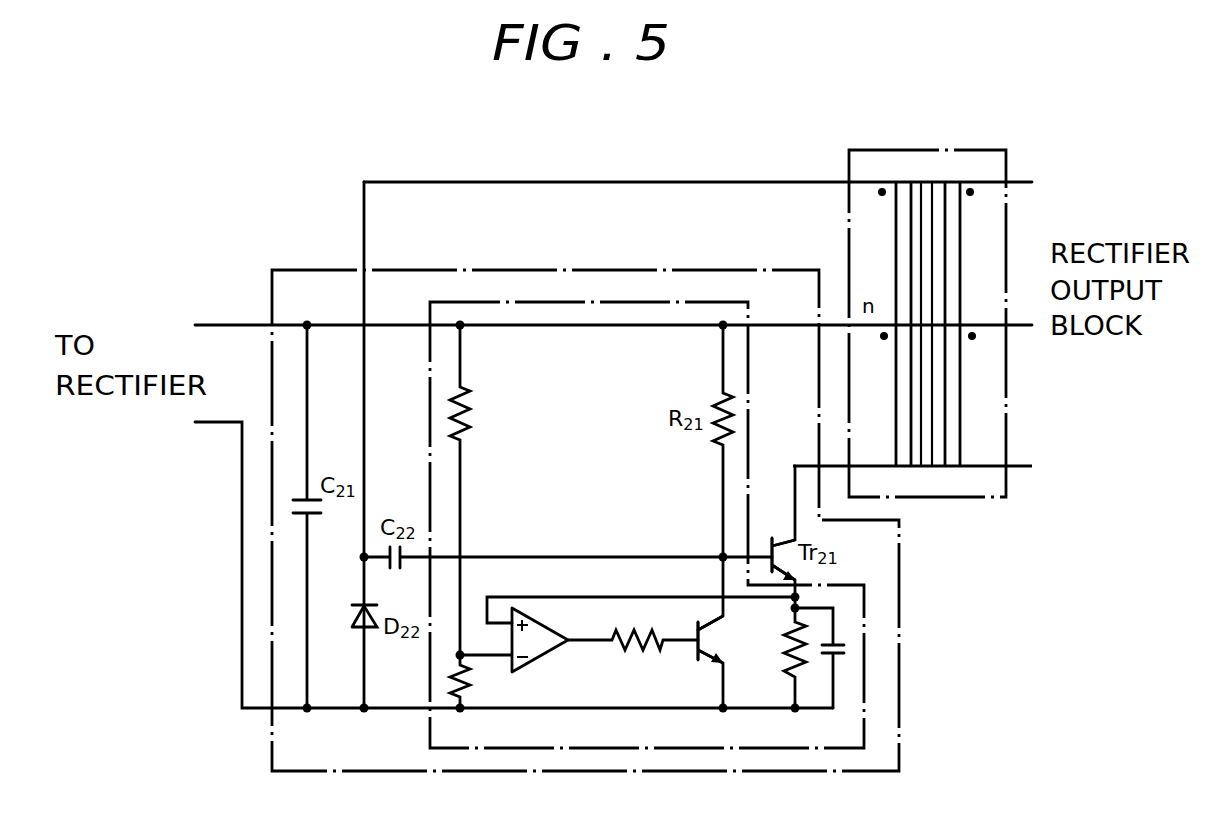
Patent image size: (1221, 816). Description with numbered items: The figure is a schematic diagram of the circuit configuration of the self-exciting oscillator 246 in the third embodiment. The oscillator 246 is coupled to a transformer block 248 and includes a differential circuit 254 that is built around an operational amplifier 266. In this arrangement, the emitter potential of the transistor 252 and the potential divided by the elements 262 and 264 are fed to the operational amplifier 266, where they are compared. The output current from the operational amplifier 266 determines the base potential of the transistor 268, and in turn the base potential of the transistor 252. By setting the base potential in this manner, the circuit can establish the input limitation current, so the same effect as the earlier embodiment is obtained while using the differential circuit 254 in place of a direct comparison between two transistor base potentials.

The self-exciting oscillator 246 is at (393, 774).
The transformer 248 is at (978, 150).
The transistor 252 is at (810, 572).
The differential circuit 254 is at (573, 302).
The transistor 262 is at (472, 418).
The transistor 264 is at (470, 692).
The operational amplifier 266 is at (548, 622).
The transistor 268 is at (727, 645).